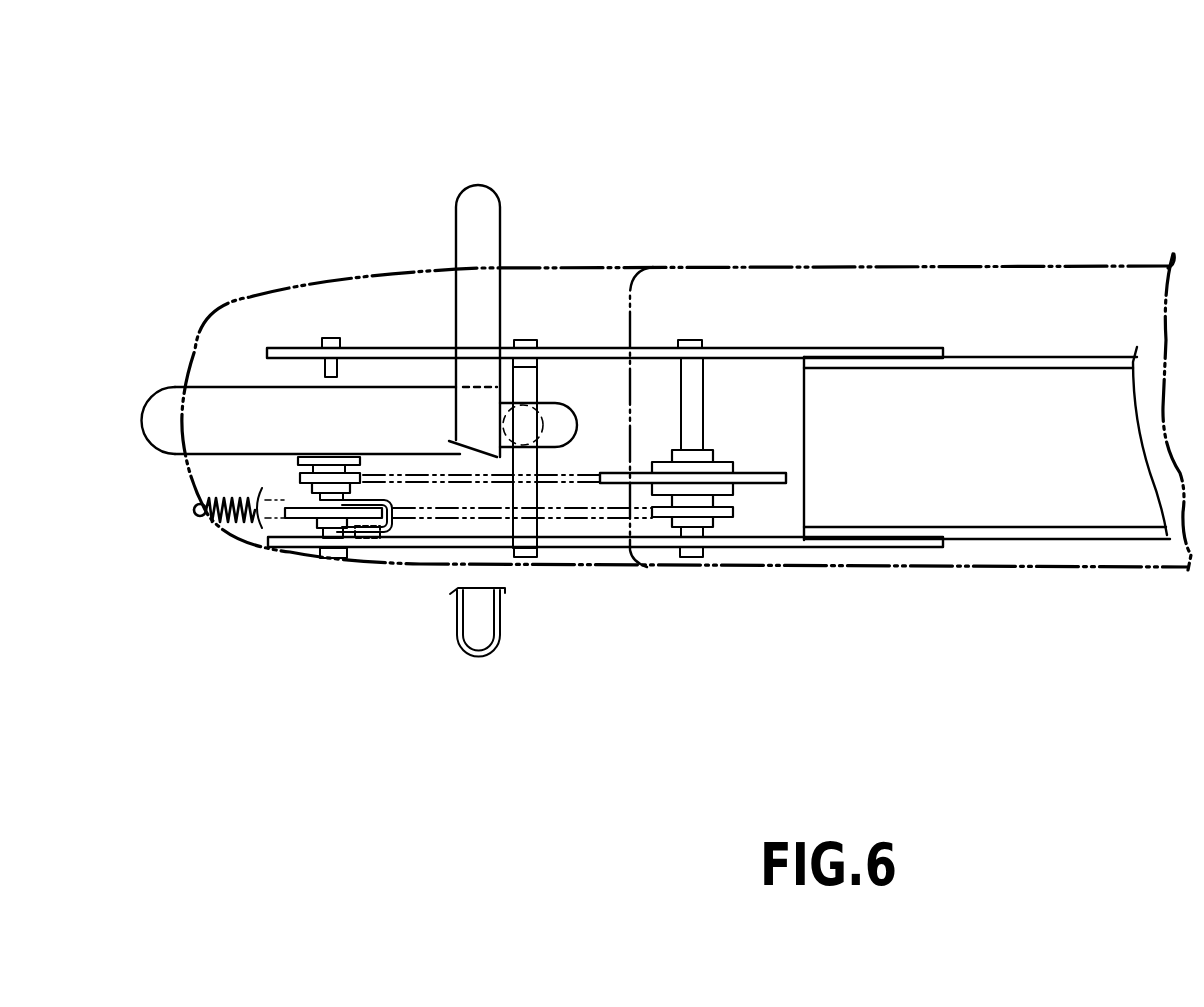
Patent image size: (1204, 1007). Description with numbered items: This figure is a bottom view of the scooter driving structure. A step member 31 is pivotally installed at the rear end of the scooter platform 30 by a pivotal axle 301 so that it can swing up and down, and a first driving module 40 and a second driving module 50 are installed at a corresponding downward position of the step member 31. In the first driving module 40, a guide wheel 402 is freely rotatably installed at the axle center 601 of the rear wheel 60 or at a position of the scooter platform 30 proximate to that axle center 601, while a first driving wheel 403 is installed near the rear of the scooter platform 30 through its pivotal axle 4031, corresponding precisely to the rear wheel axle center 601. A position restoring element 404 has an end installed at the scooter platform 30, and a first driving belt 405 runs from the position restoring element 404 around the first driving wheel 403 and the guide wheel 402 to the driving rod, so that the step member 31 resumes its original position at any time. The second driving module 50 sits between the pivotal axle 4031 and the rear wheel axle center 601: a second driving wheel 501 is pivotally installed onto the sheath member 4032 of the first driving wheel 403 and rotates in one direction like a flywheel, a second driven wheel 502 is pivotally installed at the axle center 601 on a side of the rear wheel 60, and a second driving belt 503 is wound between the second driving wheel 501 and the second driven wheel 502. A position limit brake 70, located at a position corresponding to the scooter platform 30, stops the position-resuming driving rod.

The scooter platform 30 is at (962, 530).
The pivotal axle 301 is at (527, 343).
The step member 31 is at (484, 243).
The first driving module 40 is at (622, 748).
The guide wheel 402 is at (307, 512).
The first driving wheel 403 is at (663, 513).
The pivotal axle 4031 is at (692, 532).
The sheath member 4032 is at (698, 498).
The position restoring element 404 is at (210, 513).
The first driving belt 405 is at (613, 513).
The second driving module 50 is at (665, 90).
The second driving wheel 501 is at (770, 470).
The second driven wheel 502 is at (338, 495).
The second driving belt 503 is at (398, 477).
The rear wheel 60 is at (257, 402).
The axle center 601 is at (332, 373).
The position limit brake 70 is at (377, 540).